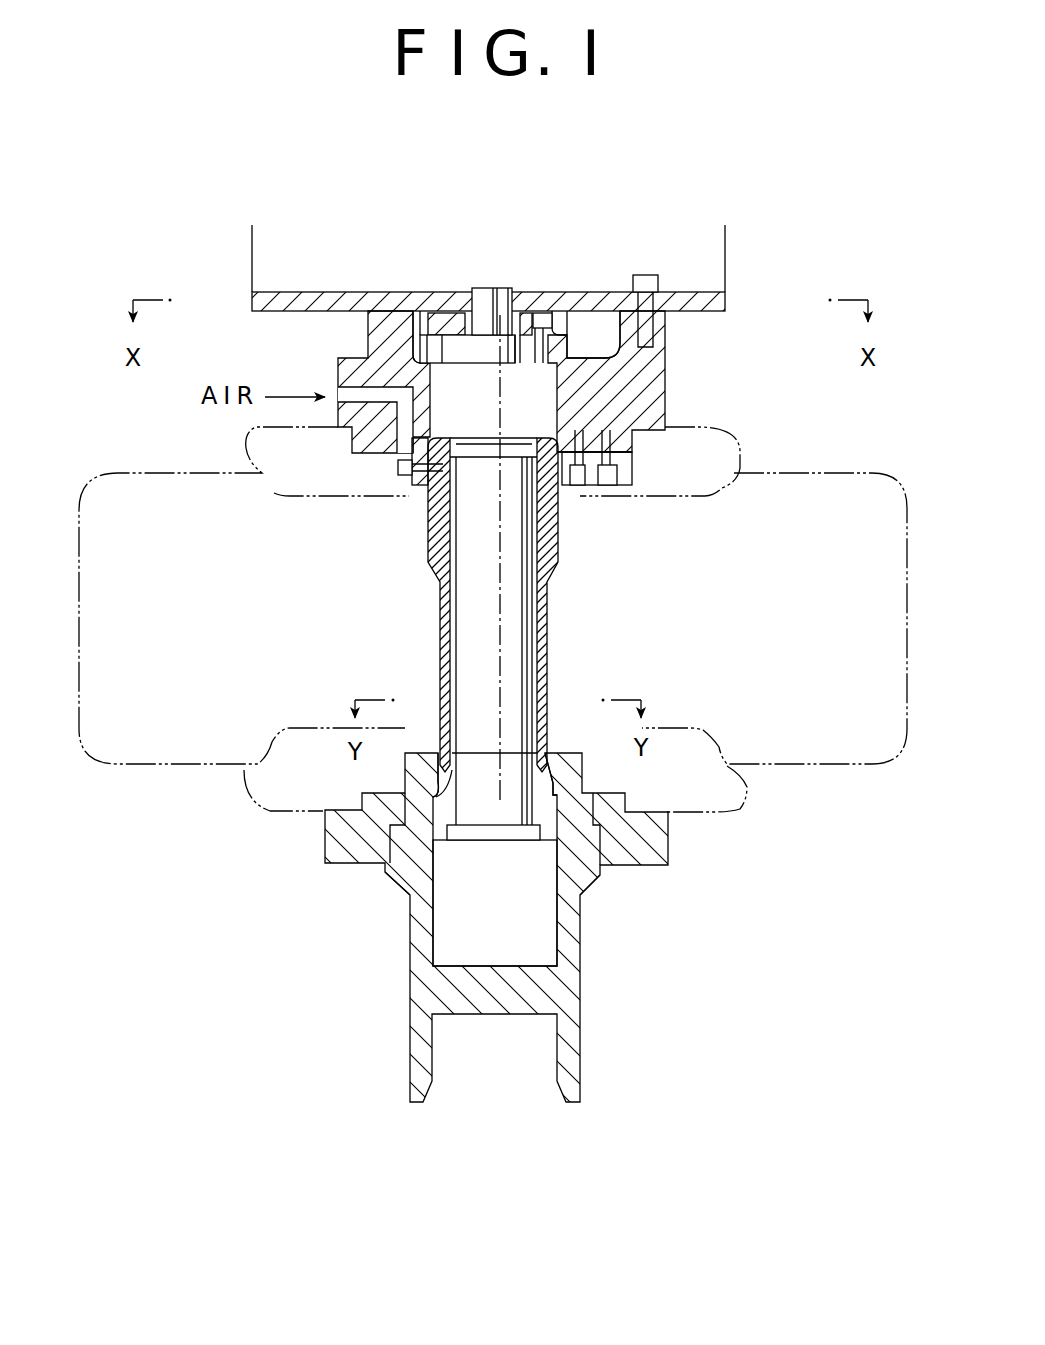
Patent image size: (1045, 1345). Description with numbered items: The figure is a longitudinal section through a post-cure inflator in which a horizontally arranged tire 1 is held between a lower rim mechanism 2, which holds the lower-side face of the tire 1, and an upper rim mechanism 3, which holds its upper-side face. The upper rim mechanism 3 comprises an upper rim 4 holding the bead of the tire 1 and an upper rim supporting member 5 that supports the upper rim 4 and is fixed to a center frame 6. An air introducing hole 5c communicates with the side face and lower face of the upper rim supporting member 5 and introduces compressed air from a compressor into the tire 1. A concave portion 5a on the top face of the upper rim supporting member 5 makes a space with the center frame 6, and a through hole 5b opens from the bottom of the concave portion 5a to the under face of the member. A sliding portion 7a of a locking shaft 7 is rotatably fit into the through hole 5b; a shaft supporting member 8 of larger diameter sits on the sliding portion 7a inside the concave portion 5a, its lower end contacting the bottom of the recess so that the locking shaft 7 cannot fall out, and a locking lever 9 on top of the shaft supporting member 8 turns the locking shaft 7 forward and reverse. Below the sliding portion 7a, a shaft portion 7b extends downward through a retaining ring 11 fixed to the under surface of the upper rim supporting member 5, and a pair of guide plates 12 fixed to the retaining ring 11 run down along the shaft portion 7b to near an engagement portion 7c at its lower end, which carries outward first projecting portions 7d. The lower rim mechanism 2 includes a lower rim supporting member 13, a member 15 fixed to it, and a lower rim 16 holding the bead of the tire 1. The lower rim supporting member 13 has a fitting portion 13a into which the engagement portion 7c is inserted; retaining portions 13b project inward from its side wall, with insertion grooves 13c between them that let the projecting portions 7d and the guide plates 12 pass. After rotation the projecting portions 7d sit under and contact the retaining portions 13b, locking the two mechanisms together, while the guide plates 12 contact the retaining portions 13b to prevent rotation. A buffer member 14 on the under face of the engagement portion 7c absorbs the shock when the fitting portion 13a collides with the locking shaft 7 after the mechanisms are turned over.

The tire 1 is at (762, 473).
The lower rim mechanism 2 is at (682, 842).
The upper rim mechanism 3 is at (680, 396).
The upper rim 4 is at (702, 428).
The upper rim supporting member 5 is at (668, 357).
The concave portion 5a is at (600, 346).
The through hole 5b is at (433, 365).
The air introducing hole 5c is at (354, 400).
The center frame 6 is at (250, 252).
The locking shaft 7 is at (543, 662).
The sliding portion 7a is at (510, 430).
The shaft portion 7b is at (517, 616).
The engagement portion 7c is at (503, 818).
The projecting portions 7d is at (440, 815).
The shaft supporting member 8 is at (490, 337).
The locking lever 9 is at (452, 322).
The retaining ring 11 is at (415, 474).
The guide plates 12 is at (428, 568).
The lower rim supporting member 13 is at (577, 1000).
The fitting portion 13a is at (550, 946).
The retaining portions 13b is at (552, 780).
The insertion grooves 13c is at (410, 800).
The buffer member 14 is at (473, 840).
The member 15 is at (327, 830).
The lower rim 16 is at (258, 806).